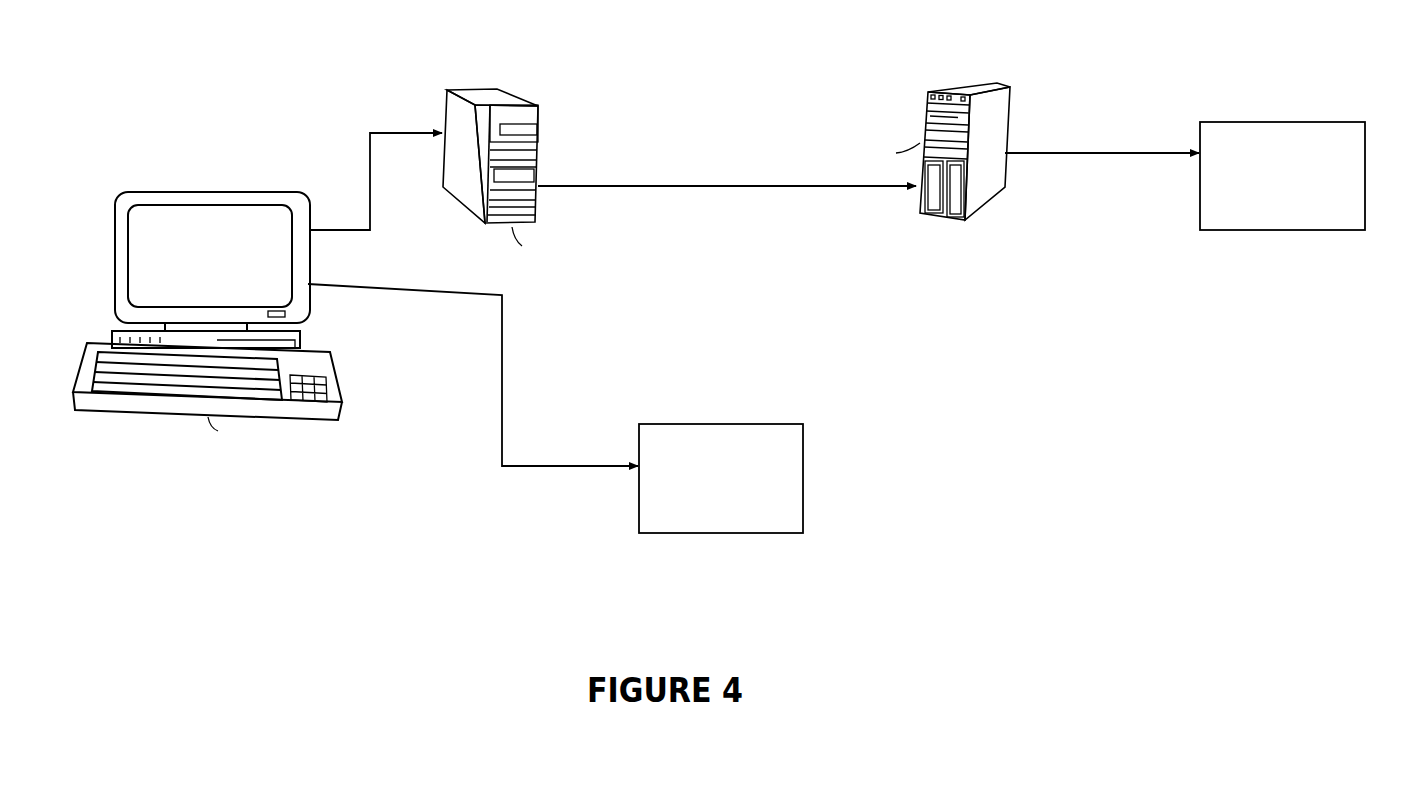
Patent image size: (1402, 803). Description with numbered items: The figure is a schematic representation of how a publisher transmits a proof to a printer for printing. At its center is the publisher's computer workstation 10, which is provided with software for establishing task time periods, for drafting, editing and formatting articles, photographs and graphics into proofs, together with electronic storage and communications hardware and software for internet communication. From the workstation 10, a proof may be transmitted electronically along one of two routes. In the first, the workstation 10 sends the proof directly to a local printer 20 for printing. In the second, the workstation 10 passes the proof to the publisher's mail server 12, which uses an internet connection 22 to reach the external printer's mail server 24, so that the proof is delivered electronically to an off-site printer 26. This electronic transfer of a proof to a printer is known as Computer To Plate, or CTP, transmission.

The publisher's computer workstation 10 is at (212, 192).
The publisher's mail server 12 is at (442, 162).
The local printer 20 is at (698, 424).
The internet connection 22 is at (660, 182).
The external printer's mail server 24 is at (950, 91).
The off-site printer 26 is at (1238, 122).